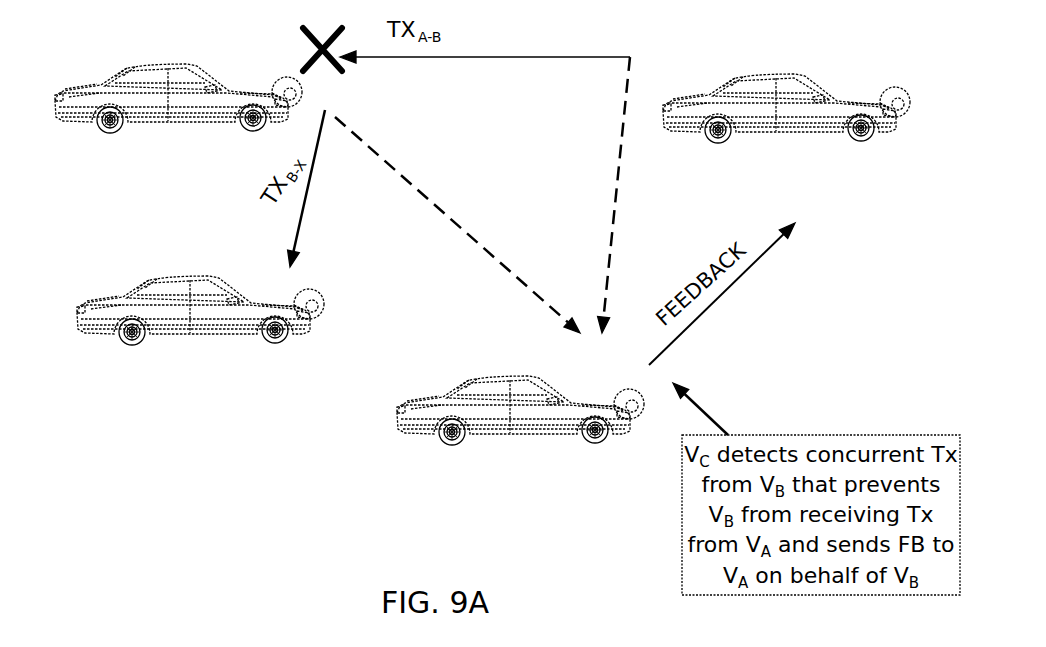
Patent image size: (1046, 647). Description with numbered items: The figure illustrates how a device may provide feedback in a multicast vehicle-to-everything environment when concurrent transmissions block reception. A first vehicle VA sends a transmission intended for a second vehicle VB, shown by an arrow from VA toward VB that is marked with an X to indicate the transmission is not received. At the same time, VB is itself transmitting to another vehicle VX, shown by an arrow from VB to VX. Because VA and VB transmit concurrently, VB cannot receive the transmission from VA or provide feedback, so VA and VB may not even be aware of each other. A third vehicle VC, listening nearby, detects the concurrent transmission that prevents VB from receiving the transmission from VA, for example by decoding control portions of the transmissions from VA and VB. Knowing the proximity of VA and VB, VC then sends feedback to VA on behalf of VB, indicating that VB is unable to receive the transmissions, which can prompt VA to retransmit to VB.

The second vehicle VB is at (178, 125).
The first vehicle VA is at (786, 134).
The vehicle X VX is at (200, 338).
The third vehicle VC is at (520, 440).